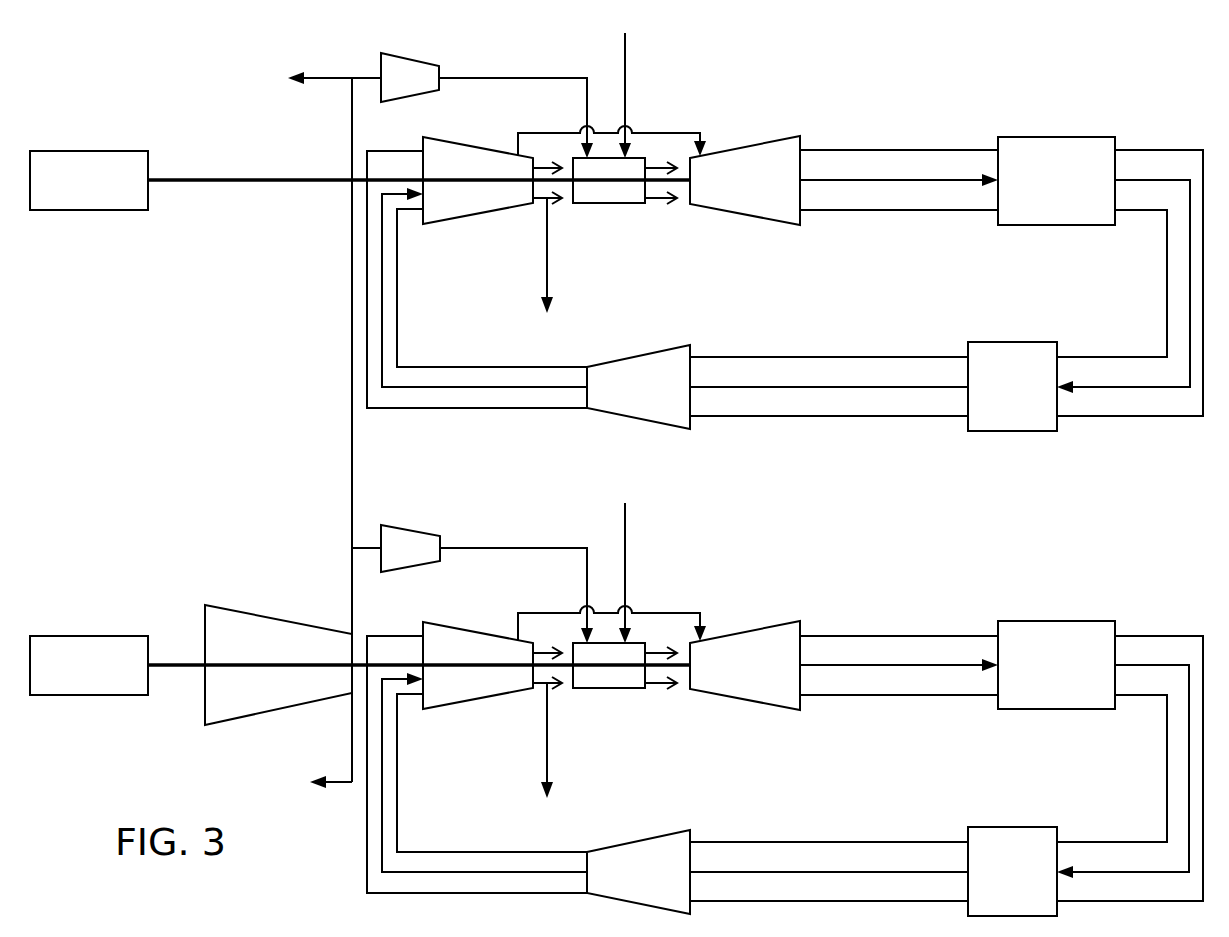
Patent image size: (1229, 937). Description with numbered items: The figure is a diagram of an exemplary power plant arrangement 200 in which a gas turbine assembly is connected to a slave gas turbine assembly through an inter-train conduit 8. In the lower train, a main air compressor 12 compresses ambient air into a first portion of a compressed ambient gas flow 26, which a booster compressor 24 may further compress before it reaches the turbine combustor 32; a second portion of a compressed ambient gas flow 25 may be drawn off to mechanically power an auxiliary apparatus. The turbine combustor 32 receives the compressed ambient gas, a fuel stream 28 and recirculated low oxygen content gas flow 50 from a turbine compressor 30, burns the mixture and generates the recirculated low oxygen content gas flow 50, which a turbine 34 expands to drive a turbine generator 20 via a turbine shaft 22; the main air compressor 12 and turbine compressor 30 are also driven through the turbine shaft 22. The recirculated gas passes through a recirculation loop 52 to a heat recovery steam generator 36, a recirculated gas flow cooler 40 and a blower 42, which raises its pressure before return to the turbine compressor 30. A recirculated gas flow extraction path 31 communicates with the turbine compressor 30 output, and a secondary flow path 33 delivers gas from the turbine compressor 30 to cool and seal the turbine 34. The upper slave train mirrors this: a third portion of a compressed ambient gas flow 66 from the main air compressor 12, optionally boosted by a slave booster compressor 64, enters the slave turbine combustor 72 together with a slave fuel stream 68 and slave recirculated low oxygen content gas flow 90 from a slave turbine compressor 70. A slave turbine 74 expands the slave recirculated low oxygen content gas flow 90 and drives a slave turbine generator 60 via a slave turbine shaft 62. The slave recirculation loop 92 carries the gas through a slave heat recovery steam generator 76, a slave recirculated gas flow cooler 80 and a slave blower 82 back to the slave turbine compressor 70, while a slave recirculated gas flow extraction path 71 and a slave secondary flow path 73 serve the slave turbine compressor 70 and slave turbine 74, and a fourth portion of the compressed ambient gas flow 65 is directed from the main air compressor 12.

The inter-train conduit 8 is at (352, 401).
The main air compressor 12 is at (263, 617).
The turbine generator 20 is at (90, 636).
The turbine shaft 22 is at (182, 666).
The booster compressor 24 is at (425, 533).
The second portion of a compressed ambient gas flow 25 is at (317, 784).
The first portion of a compressed ambient gas flow 26 is at (587, 578).
The fuel stream 28 is at (625, 572).
The turbine compressor 30 is at (478, 630).
The recirculated gas flow extraction path 31 is at (549, 754).
The turbine combustor 32 is at (633, 688).
The secondary flow path 33 is at (690, 613).
The turbine 34 is at (735, 633).
The heat recovery steam generator 36 is at (1056, 621).
The recirculated gas flow cooler 40 is at (1013, 827).
The blower 42 is at (648, 830).
The recirculated low oxygen content gas flow 50 is at (880, 665).
The recirculation loop 52 is at (1175, 636).
The slave turbine generator 60 is at (90, 151).
The slave turbine shaft 62 is at (270, 182).
The slave booster compressor 64 is at (423, 62).
The fourth portion of the compressed ambient gas flow 65 is at (305, 79).
The third portion of a compressed ambient gas flow 66 is at (587, 97).
The slave fuel stream 68 is at (625, 92).
The slave turbine compressor 70 is at (475, 144).
The slave recirculated gas flow extraction path 71 is at (546, 269).
The slave turbine combustor 72 is at (630, 203).
The slave secondary flow path 73 is at (675, 130).
The slave turbine 74 is at (735, 148).
The slave heat recovery steam generator 76 is at (1056, 137).
The slave recirculated gas flow cooler 80 is at (1013, 342).
The slave blower 82 is at (648, 345).
The slave recirculated low oxygen content gas flow 90 is at (880, 180).
The slave recirculation loop 92 is at (1175, 150).
The power plant arrangement 200 is at (145, 372).